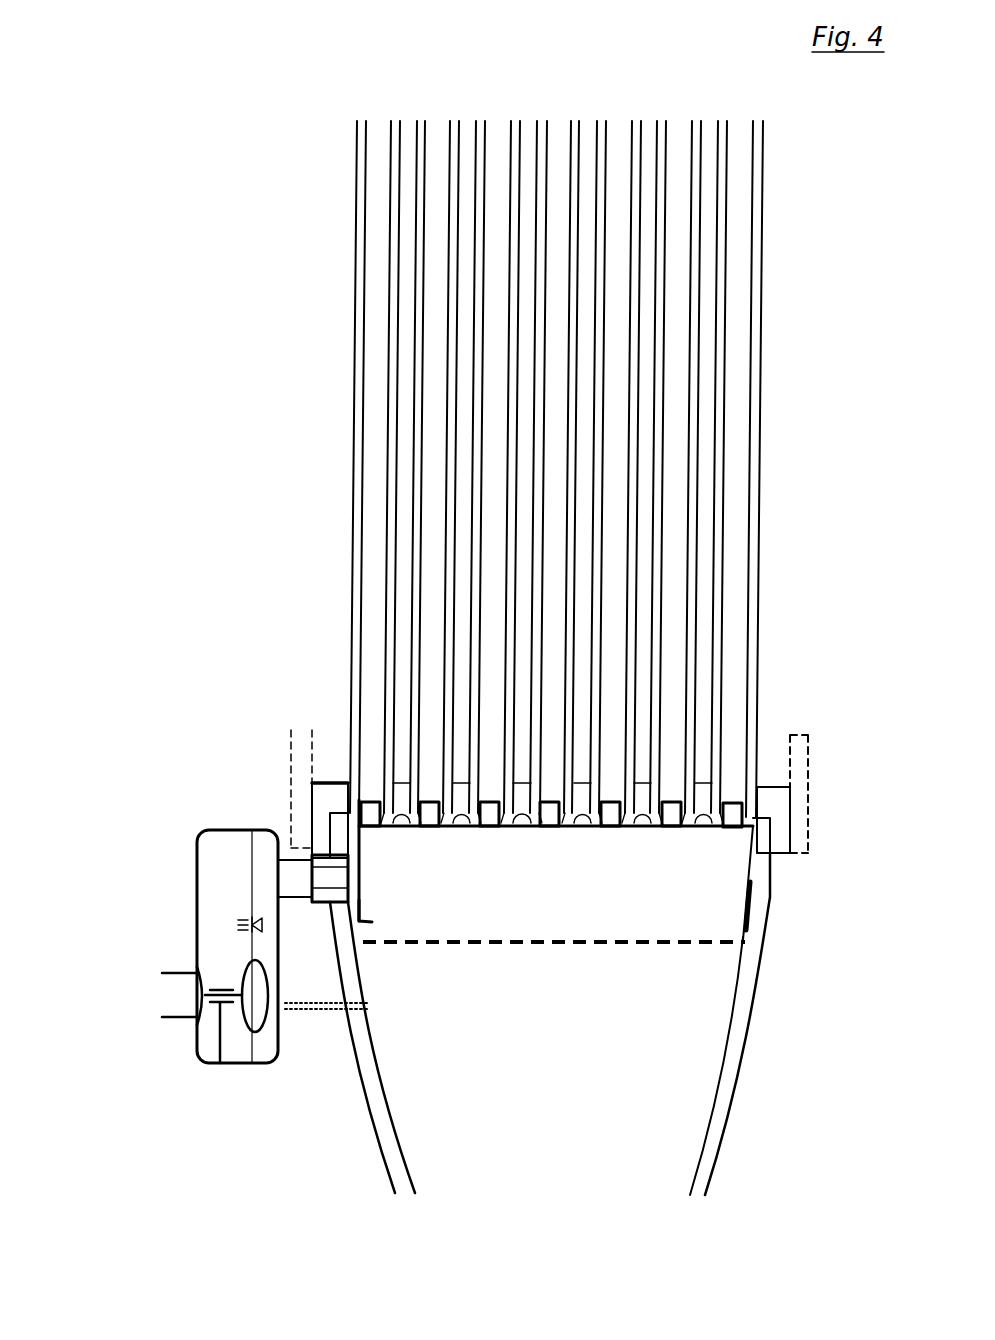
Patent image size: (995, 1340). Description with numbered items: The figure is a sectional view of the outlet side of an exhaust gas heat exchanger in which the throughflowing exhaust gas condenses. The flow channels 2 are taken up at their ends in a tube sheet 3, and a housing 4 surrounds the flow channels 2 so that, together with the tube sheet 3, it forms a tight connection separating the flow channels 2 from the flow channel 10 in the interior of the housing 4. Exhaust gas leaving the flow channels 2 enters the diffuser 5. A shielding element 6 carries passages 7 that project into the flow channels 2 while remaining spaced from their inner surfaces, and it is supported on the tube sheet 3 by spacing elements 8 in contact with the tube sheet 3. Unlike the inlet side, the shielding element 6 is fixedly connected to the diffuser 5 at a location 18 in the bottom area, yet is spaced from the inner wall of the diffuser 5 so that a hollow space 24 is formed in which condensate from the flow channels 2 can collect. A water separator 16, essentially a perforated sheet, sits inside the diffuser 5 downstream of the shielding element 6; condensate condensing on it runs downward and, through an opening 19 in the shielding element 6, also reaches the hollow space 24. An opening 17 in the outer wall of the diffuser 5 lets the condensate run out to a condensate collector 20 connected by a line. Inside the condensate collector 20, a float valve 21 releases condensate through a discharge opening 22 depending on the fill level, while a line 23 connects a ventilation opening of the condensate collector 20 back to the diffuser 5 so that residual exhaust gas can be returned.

The flow channels 2 is at (738, 383).
The tube sheet 3 is at (772, 787).
The housing 4 is at (805, 770).
The diffuser 5 is at (770, 902).
The shielding element 6 is at (763, 905).
The passages 7 is at (352, 783).
The spacing elements 8 is at (385, 813).
The flow channel 10 is at (703, 327).
The water separator 16 is at (684, 947).
The opening 17 is at (350, 878).
The location 18 is at (352, 935).
The opening 19 is at (358, 930).
The condensate collector 20 is at (210, 858).
The float valve 21 is at (257, 982).
The discharge opening 22 is at (197, 1008).
The line 23 is at (294, 1010).
The hollow space 24 is at (355, 845).